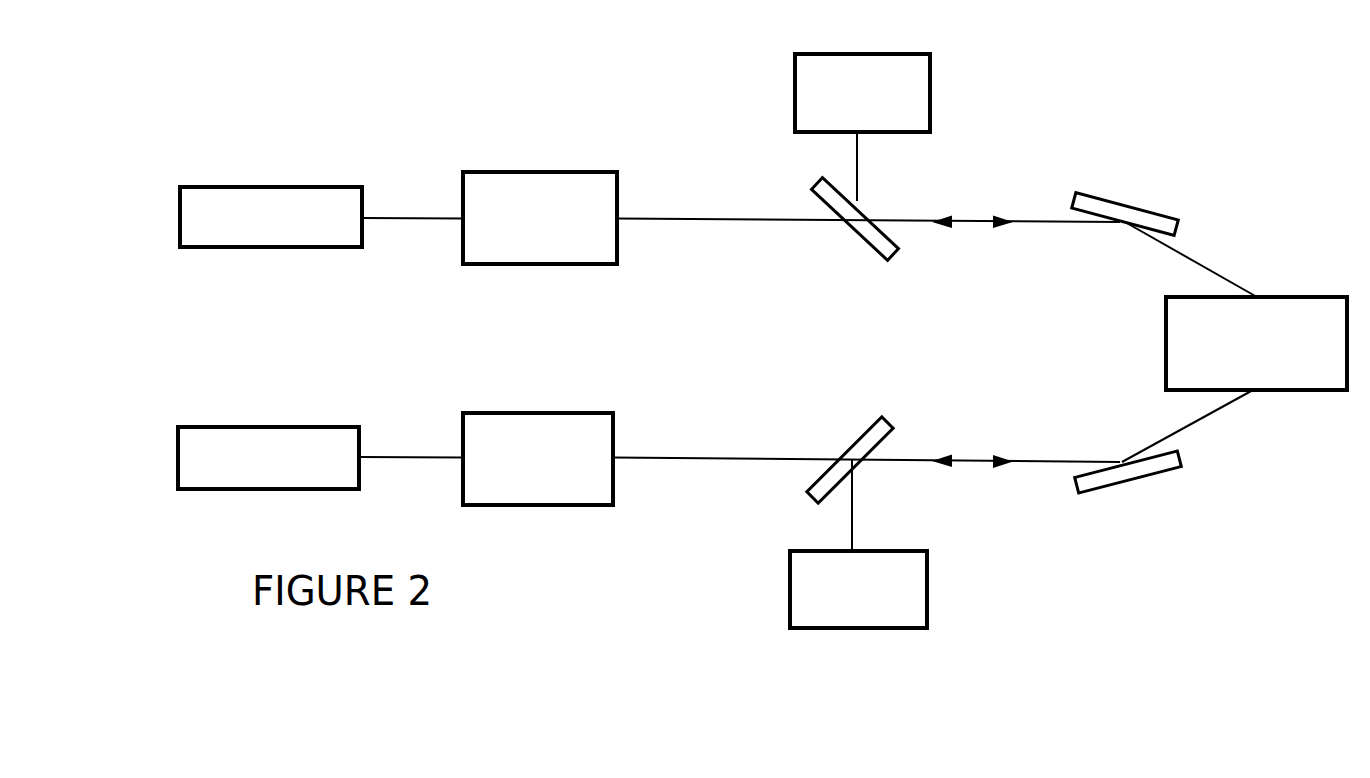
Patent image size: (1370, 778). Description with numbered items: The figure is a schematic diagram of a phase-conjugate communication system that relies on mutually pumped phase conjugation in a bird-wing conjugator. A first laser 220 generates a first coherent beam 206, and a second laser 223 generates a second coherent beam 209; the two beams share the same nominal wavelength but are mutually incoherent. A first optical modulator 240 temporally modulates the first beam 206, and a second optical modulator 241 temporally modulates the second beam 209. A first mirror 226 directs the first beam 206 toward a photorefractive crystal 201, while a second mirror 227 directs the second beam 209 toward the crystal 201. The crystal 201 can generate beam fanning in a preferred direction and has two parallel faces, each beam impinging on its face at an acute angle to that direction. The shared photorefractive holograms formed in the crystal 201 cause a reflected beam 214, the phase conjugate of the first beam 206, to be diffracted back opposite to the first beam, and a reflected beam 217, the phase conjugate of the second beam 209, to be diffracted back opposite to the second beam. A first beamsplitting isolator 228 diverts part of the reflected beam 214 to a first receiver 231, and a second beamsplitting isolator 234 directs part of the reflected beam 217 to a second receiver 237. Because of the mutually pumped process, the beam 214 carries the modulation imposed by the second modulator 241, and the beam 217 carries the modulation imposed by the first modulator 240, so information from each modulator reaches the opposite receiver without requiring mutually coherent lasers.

The photorefractive crystal 201 is at (1165, 345).
The first coherent beam 206 is at (417, 455).
The second coherent beam 209 is at (397, 216).
The reflected beam 214 is at (1210, 415).
The reflected beam 217 is at (1205, 265).
The first laser 220 is at (275, 426).
The second laser 223 is at (272, 186).
The first mirror 226 is at (1128, 482).
The second mirror 227 is at (1130, 203).
The first beamsplitting isolator 228 is at (855, 435).
The first receiver 231 is at (790, 598).
The second beamsplitting isolator 234 is at (858, 237).
The second receiver 237 is at (795, 93).
The first optical modulator 240 is at (523, 412).
The second optical modulator 241 is at (520, 171).